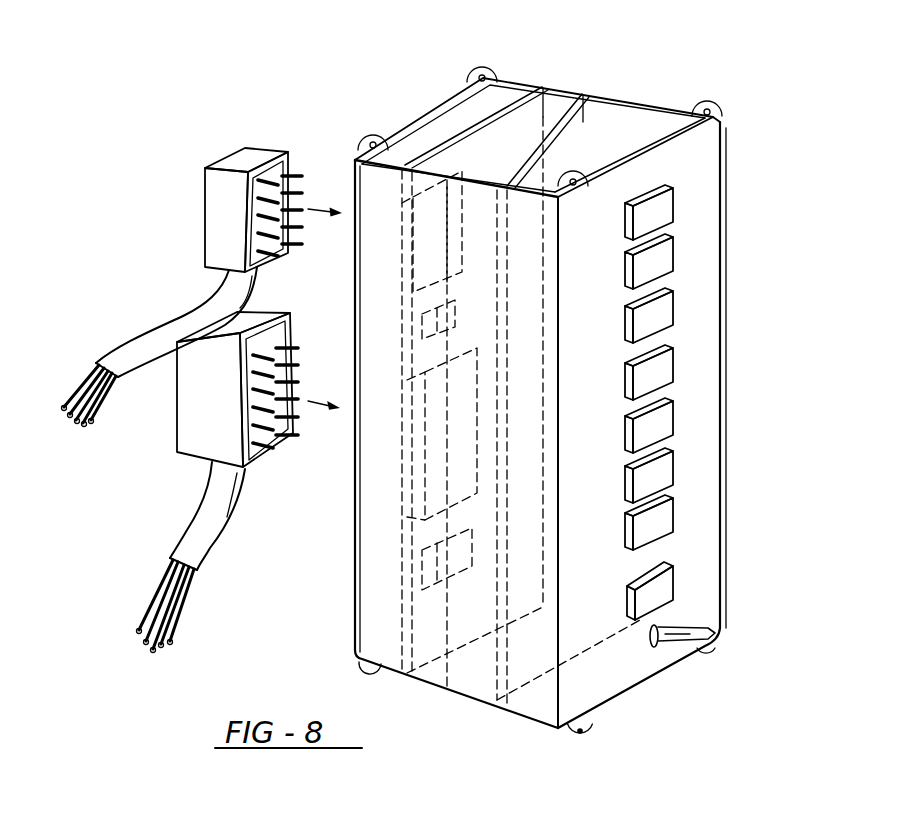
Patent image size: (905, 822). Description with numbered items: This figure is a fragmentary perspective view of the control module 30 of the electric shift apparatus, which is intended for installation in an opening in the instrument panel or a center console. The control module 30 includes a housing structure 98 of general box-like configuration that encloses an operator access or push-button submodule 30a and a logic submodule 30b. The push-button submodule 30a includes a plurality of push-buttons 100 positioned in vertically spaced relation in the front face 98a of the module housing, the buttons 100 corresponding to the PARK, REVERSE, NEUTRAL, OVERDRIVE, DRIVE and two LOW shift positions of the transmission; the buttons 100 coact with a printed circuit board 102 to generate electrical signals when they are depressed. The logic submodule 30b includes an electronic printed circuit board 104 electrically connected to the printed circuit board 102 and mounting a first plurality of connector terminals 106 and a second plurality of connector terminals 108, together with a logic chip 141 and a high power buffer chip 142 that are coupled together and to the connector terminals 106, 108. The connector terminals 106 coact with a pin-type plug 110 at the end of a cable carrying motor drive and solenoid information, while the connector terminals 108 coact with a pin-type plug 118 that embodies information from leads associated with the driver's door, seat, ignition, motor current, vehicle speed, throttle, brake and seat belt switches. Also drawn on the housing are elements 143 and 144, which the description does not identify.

The control module 30 is at (748, 174).
The push-button submodule 30a is at (669, 125).
The logic submodule 30b is at (566, 72).
The housing structure 98 is at (388, 604).
The front face 98a is at (718, 384).
The push-buttons 100 is at (672, 210).
The printed circuit board 102 is at (618, 102).
The electronic printed circuit board 104 is at (512, 90).
The first plurality of connector terminals 106 is at (425, 445).
The second plurality of connector terminals 108 is at (410, 263).
The pin-type plug 110 is at (208, 415).
The pin-type plug 118 is at (241, 160).
The logic chip 141 is at (422, 334).
The high power buffer chip 142 is at (440, 558).
The switch block 143 is at (675, 587).
The screw 144 is at (688, 640).